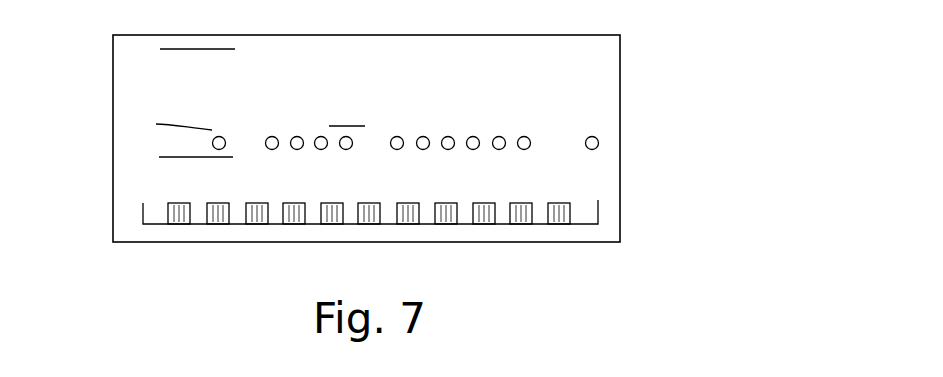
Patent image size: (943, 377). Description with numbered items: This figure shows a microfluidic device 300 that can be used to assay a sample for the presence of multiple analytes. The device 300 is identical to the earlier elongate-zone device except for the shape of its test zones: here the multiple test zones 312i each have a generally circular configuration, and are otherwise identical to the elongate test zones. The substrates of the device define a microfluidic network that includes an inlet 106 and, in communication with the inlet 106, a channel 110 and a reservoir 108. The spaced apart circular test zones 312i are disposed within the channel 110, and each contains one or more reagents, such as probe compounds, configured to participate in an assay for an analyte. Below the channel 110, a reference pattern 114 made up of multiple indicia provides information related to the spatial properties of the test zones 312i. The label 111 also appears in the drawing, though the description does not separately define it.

The microfluidic device 300 is at (620, 68).
The inlet 106 is at (155, 152).
The test zones 312i is at (322, 136).
The channel 110 is at (481, 130).
The reference pattern 114 is at (412, 190).
The reservoir 108 is at (580, 135).
The contact pad 111 is at (599, 144).